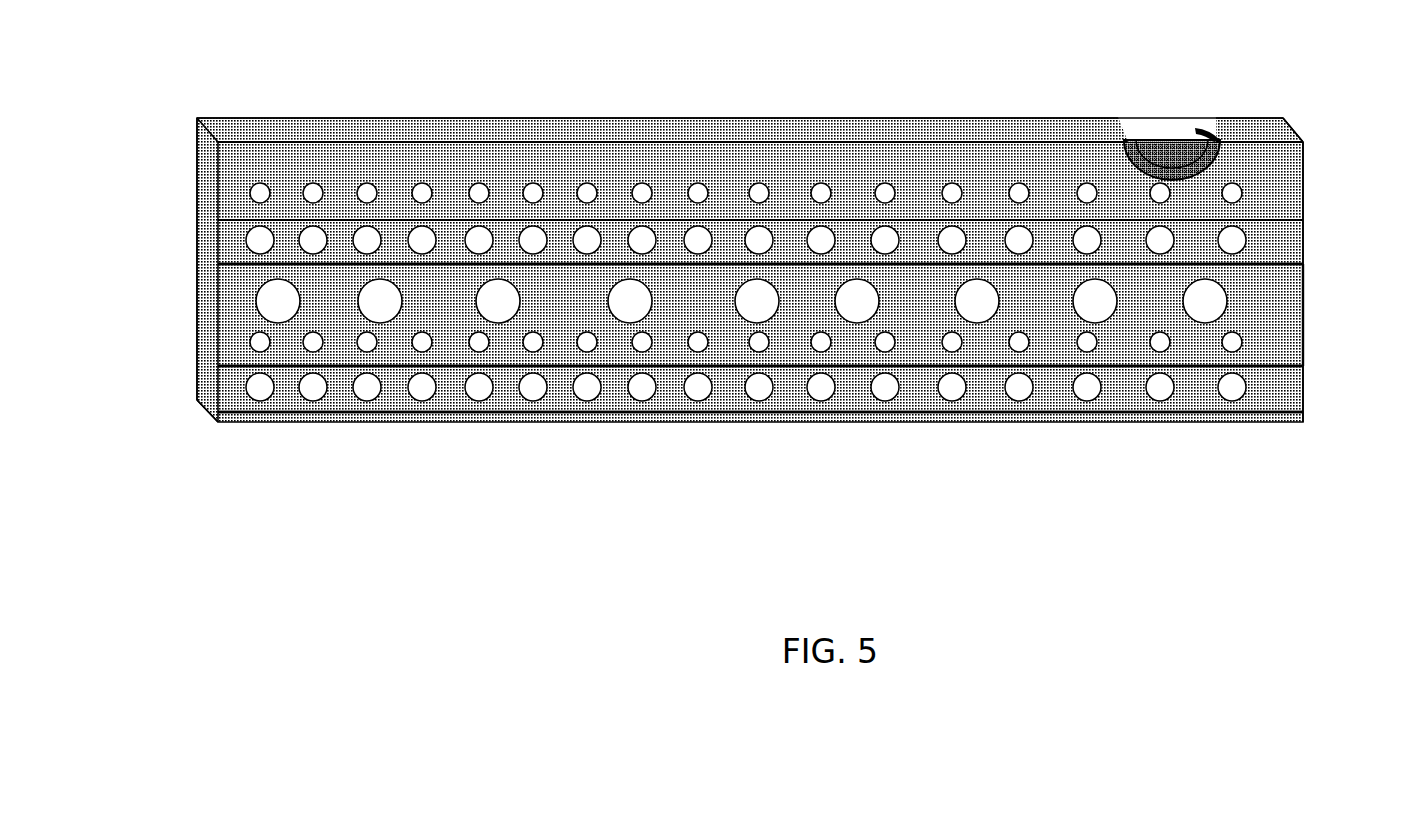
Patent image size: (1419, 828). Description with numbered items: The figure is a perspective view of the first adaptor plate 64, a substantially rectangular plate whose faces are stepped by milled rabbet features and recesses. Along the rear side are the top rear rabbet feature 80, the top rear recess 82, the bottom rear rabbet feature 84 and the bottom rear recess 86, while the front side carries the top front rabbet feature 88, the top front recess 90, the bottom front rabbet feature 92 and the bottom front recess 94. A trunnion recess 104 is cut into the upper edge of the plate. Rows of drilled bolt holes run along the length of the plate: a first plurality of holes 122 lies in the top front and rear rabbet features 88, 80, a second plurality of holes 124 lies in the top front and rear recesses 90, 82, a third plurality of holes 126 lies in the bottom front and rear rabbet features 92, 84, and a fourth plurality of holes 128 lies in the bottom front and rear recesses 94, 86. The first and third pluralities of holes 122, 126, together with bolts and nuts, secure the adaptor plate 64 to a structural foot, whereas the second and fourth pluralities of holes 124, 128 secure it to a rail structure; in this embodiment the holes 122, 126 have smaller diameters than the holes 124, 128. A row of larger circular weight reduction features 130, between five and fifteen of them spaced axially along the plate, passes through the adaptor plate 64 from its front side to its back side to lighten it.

The first adaptor plate 64 is at (750, 270).
The top rear rabbet feature 80 is at (203, 147).
The top rear recess 82 is at (203, 190).
The bottom rear rabbet feature 84 is at (200, 293).
The bottom rear recess 86 is at (202, 343).
The top front rabbet feature 88 is at (1293, 190).
The top front recess 90 is at (213, 243).
The bottom front rabbet feature 92 is at (1275, 281).
The bottom front recess 94 is at (217, 405).
The trunnion recess 104 is at (1178, 162).
The first plurality of holes 122 is at (1324, 193).
The second plurality of holes 124 is at (1324, 242).
The third plurality of holes 126 is at (1324, 343).
The fourth plurality of holes 128 is at (1324, 389).
The weight reduction features 130 is at (498, 323).